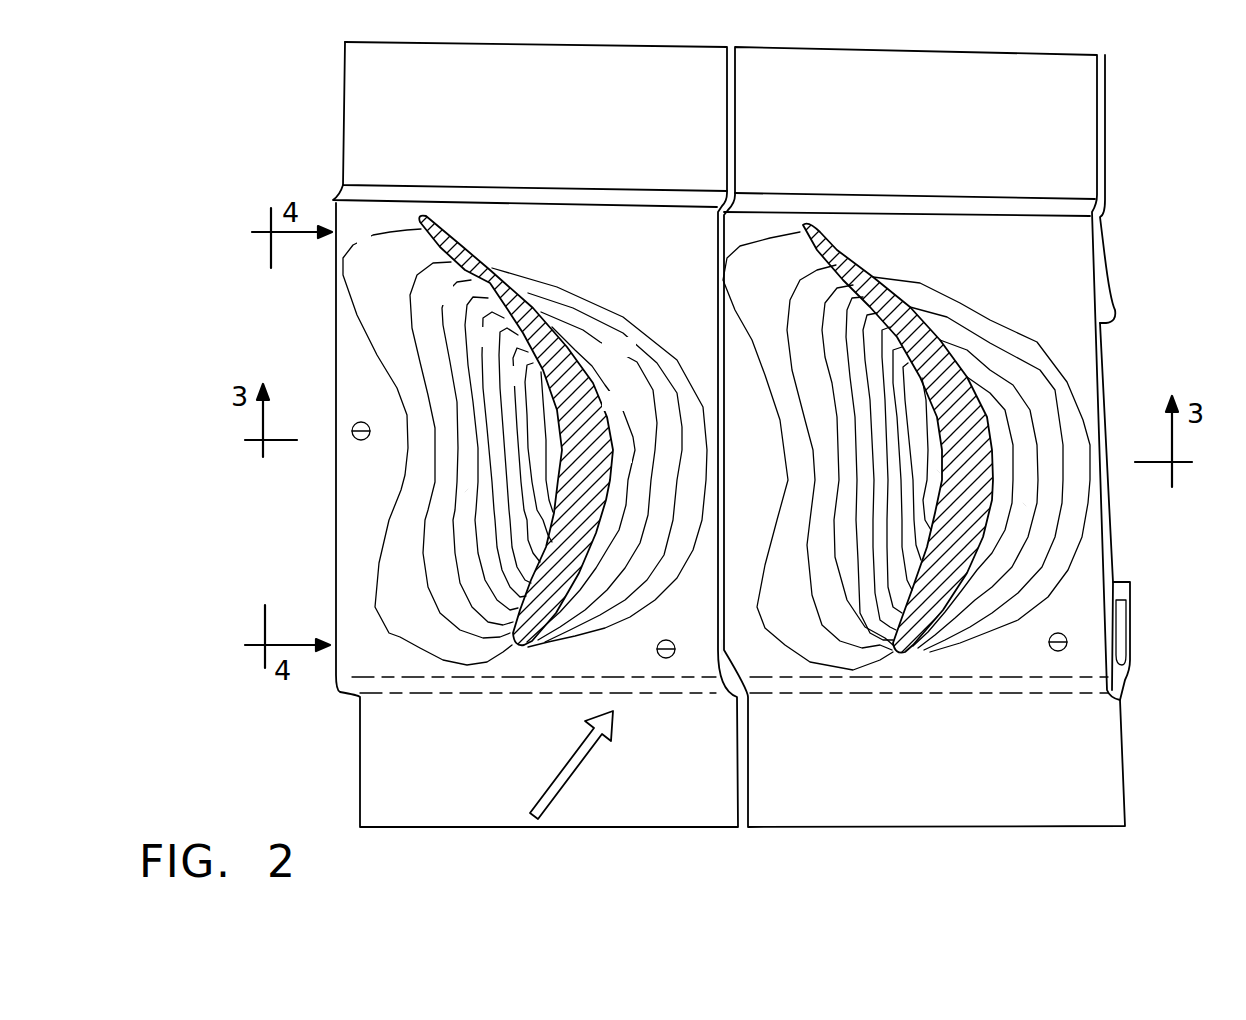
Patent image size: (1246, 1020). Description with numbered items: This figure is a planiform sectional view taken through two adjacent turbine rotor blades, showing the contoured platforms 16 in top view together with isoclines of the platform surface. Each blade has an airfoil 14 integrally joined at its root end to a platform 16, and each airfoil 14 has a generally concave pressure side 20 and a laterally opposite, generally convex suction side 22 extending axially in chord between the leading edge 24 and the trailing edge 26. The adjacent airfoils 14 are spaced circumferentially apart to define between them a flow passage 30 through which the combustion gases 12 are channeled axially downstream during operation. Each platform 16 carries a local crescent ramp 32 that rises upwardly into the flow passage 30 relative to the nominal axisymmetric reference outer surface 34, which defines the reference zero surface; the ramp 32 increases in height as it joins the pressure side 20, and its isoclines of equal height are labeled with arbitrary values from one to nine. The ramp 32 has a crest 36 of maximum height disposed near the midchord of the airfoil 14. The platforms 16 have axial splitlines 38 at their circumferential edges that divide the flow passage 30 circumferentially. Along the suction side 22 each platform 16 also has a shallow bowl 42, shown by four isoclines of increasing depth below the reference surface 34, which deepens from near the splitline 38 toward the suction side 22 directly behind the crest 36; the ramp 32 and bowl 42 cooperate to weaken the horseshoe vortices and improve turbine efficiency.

The combustion gases 12 is at (558, 768).
The airfoil 14 is at (599, 462).
The platform 16 is at (1100, 345).
The pressure side 20 is at (937, 432).
The suction side 22 is at (985, 425).
The leading edge 24 is at (898, 655).
The trailing edge 26 is at (802, 227).
The flow passage 30 is at (626, 232).
The crescent ramp 32 is at (462, 493).
The nominal axisymmetric reference outer surface 34 is at (1016, 257).
The crest 36 is at (937, 470).
The axial splitline 38 is at (720, 653).
The bowl 42 is at (1028, 506).